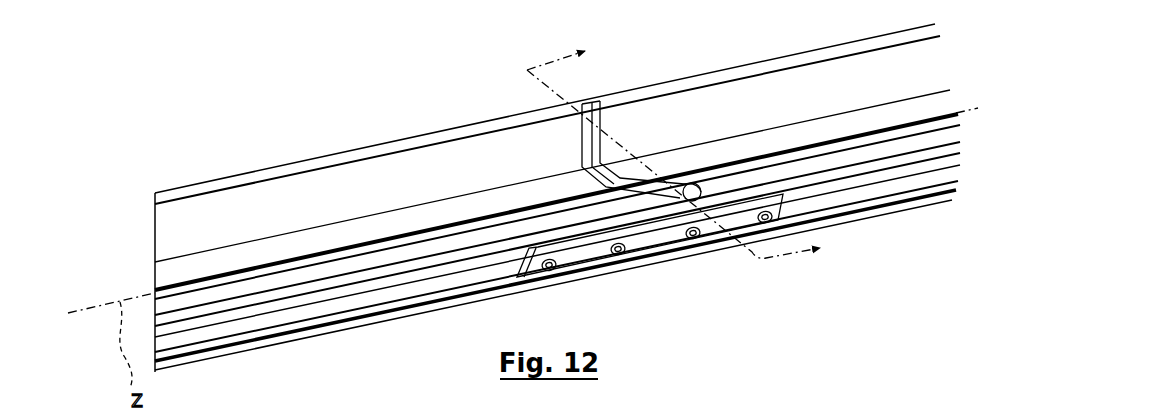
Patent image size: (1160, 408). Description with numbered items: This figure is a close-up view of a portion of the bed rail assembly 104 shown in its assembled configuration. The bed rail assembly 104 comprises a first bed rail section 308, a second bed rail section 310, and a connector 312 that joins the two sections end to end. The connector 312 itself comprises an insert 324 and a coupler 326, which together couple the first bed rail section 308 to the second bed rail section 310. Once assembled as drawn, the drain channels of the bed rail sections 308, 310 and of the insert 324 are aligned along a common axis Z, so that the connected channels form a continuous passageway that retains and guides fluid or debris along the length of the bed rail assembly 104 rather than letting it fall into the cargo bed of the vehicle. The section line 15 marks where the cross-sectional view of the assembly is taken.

The bed rail assembly 104 is at (366, 72).
The first bed rail section 308 is at (312, 175).
The second bed rail section 310 is at (747, 102).
The connector 312 is at (684, 303).
The insert 324 is at (586, 102).
The coupler 326 is at (562, 276).
The section line 15- 15 is at (654, 166).